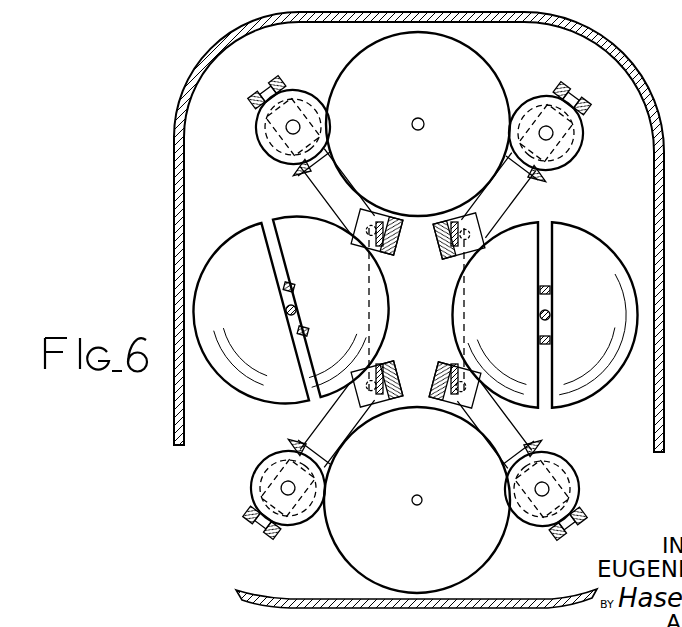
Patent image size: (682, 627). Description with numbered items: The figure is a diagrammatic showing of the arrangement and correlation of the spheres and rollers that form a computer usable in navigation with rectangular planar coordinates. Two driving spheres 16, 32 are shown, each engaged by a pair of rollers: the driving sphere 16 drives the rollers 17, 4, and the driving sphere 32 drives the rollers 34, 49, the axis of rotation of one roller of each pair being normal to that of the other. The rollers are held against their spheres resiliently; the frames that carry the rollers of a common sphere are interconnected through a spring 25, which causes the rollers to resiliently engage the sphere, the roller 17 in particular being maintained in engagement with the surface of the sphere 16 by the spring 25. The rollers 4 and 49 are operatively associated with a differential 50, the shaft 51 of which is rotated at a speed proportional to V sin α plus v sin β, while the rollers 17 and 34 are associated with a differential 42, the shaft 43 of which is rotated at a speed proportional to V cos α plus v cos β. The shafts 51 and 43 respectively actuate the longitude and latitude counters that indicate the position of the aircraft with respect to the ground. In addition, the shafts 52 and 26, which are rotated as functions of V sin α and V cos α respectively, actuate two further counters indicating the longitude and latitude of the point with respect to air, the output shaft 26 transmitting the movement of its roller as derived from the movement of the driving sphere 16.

The roller 4 is at (353, 230).
The driving sphere 16 is at (243, 240).
The roller 17 is at (347, 398).
The spring 25 is at (380, 269).
The output shaft 26 is at (280, 487).
The driving sphere 32 is at (582, 237).
The roller 34 is at (483, 410).
The differential 42 is at (495, 558).
The shaft 43 is at (413, 503).
The roller 49 is at (483, 227).
The differential 50 is at (495, 72).
The shaft 51 is at (423, 122).
The shaft 52 is at (295, 123).